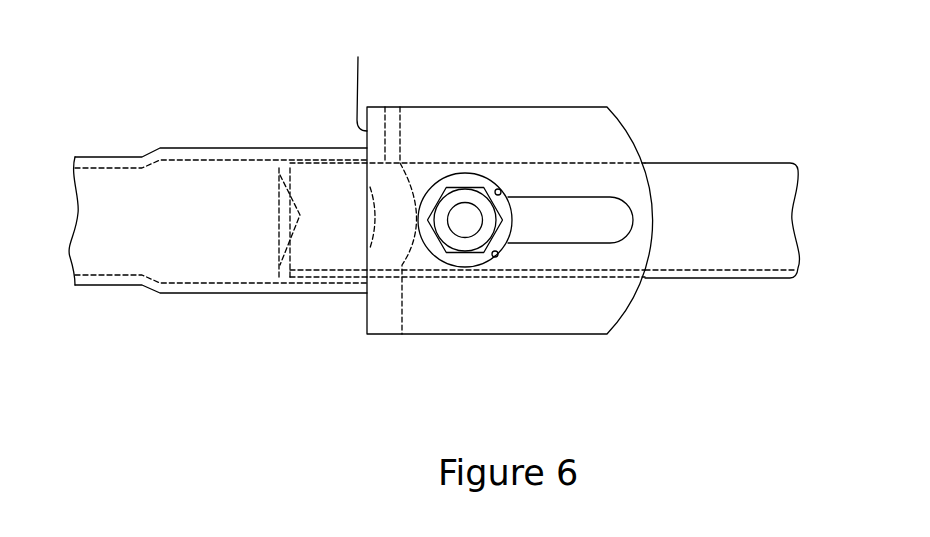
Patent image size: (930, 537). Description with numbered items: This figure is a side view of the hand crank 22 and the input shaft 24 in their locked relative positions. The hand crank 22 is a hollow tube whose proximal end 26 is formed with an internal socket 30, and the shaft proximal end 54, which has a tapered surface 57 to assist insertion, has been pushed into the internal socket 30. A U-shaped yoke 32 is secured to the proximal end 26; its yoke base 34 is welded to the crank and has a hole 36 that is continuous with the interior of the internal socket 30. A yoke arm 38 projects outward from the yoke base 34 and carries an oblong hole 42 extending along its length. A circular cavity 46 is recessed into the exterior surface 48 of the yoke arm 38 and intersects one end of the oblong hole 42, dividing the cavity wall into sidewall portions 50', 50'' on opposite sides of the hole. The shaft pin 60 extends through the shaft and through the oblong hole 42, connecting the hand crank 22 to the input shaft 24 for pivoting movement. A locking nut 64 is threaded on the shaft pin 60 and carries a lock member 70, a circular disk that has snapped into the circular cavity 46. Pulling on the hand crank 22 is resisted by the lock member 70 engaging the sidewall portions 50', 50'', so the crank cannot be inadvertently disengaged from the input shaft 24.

The hand crank 22 is at (150, 292).
The input shaft 24 is at (735, 175).
The proximal end 26 is at (265, 148).
The internal socket 30 is at (202, 286).
The yoke 32 is at (438, 105).
The yoke base 34 is at (357, 82).
The hole 36 is at (385, 107).
The yoke arm 38 is at (540, 323).
The oblong hole 42 is at (571, 241).
The circular cavity 46 is at (486, 172).
The exterior surface 48 is at (597, 120).
The sidewall portion 50' is at (540, 123).
The sidewall portion 50'' is at (500, 323).
The shaft proximal end 54 is at (323, 271).
The tapered surface 57 is at (275, 282).
The shaft pin 60 is at (472, 220).
The locking nut 64 is at (448, 252).
The lock member 70 is at (463, 178).